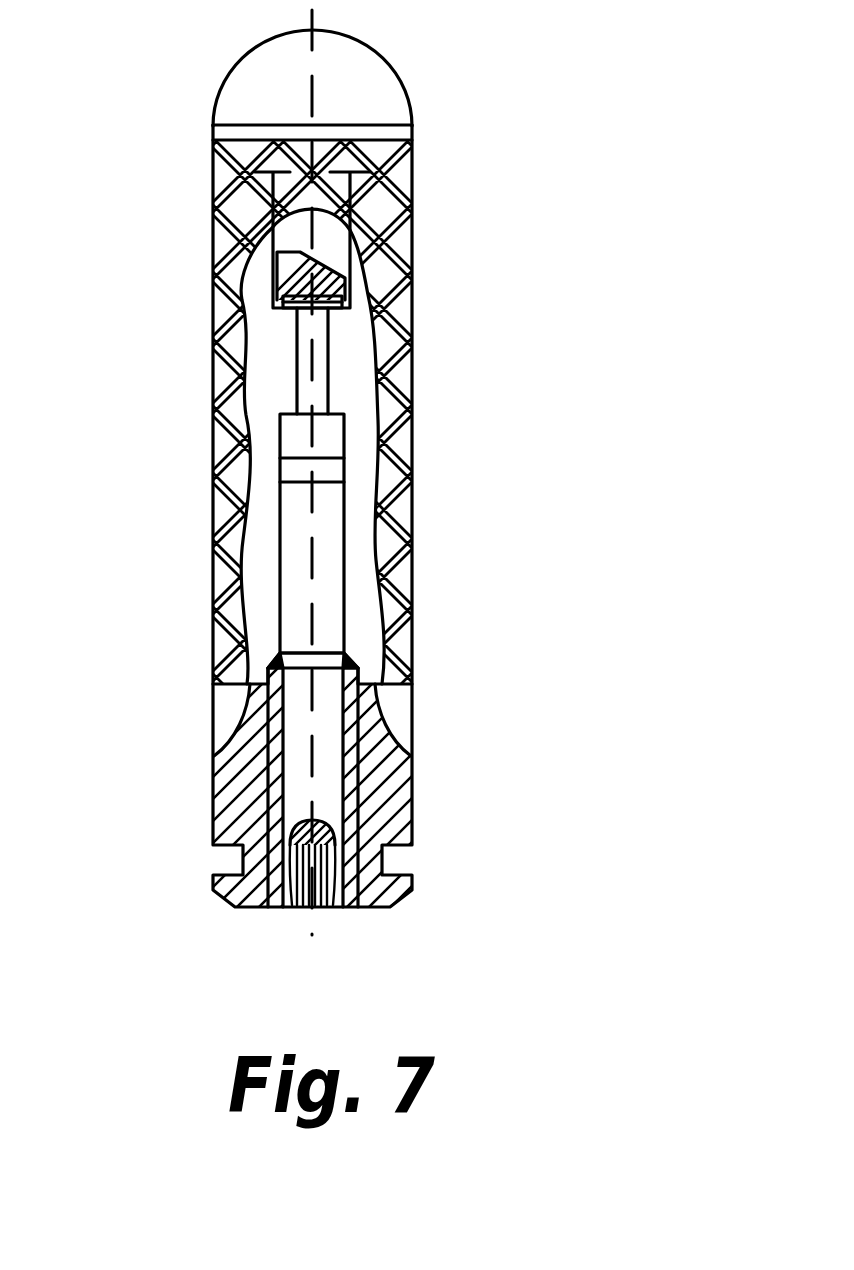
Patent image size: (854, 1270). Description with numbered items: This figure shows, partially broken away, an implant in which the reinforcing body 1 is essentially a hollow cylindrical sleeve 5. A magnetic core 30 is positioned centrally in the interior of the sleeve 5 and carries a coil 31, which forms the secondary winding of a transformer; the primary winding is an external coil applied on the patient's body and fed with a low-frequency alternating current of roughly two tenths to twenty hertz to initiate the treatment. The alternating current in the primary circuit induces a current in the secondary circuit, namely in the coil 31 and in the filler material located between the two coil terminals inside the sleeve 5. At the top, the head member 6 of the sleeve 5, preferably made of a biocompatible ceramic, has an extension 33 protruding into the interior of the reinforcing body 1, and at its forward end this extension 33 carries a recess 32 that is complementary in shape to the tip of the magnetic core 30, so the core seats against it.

The reinforcing body 1 is at (213, 481).
The hollow cylindrical sleeve 5 is at (213, 610).
The head member 6 is at (352, 68).
The magnetic core 30 is at (327, 590).
The coil 31 is at (327, 474).
The recess 32 is at (322, 270).
The extension 33 is at (272, 262).